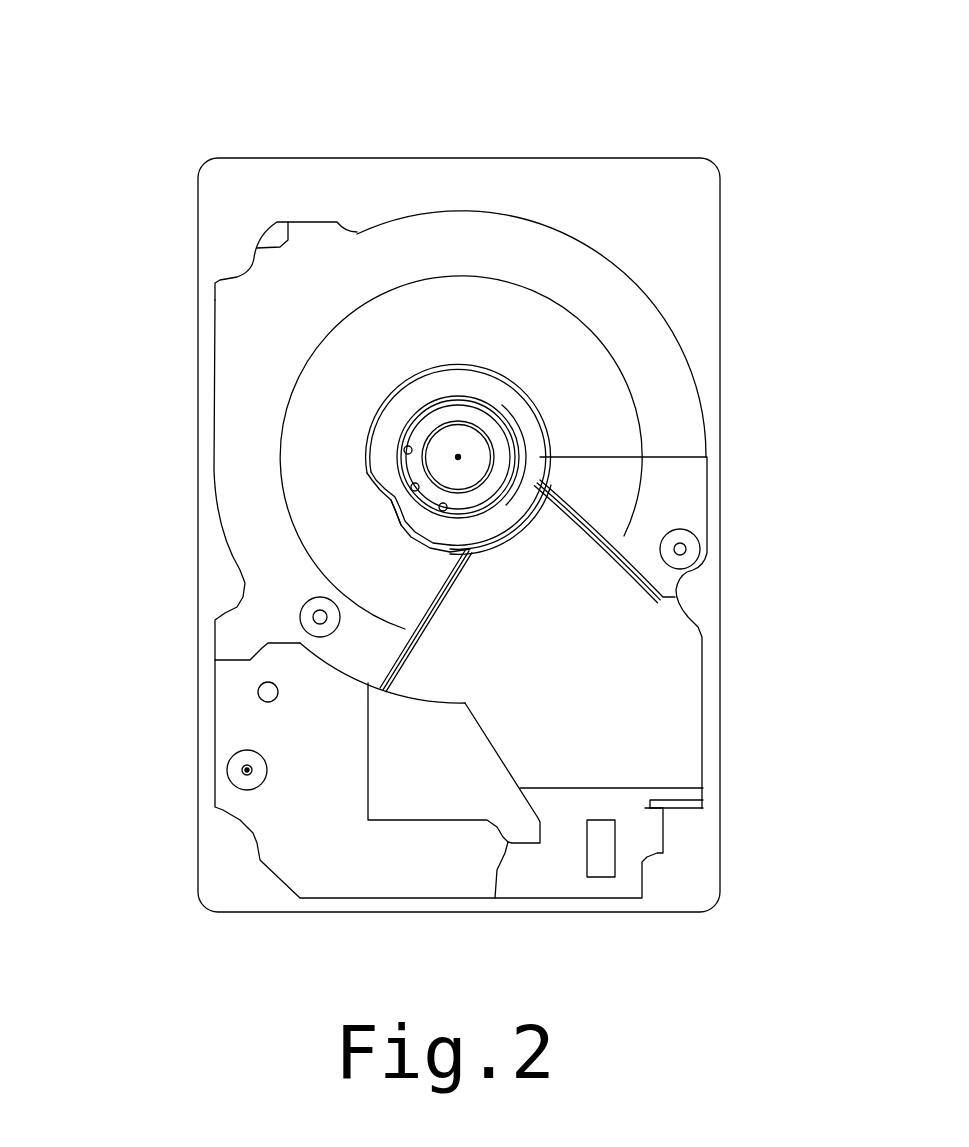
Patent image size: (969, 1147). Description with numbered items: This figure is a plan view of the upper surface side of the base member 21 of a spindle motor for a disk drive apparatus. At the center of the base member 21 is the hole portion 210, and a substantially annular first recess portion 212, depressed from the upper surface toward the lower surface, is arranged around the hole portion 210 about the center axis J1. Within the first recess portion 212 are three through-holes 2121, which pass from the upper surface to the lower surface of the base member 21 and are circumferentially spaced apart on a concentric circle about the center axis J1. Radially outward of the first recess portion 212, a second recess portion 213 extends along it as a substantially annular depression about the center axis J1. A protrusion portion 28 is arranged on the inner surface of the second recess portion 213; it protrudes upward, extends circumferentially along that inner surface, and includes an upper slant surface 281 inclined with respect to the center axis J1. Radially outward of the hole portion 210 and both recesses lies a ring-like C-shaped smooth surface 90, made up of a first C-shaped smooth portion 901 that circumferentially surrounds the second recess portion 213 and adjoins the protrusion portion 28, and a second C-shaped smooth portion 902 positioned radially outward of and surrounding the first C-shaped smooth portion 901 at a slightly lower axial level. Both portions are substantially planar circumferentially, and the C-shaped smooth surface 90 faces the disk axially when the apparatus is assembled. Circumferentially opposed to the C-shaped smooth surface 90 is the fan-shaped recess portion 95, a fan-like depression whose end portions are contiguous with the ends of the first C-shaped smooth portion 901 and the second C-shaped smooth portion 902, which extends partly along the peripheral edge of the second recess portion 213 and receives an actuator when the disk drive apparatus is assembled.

The base member 21 is at (200, 118).
The C-shaped smooth surface 90 is at (481, 354).
The first C-shaped smooth portion 901 is at (387, 317).
The second C-shaped smooth portion 902 is at (340, 273).
The center axis J1 is at (458, 457).
The hole portion 210 is at (462, 432).
The first recess portion 212 is at (498, 430).
The second recess portion 213 is at (527, 447).
The through-hole 2121 is at (405, 448).
The protrusion portion 28 is at (368, 468).
The upper slant surface 281 is at (393, 510).
The fan-shaped recess portion 95 is at (580, 577).